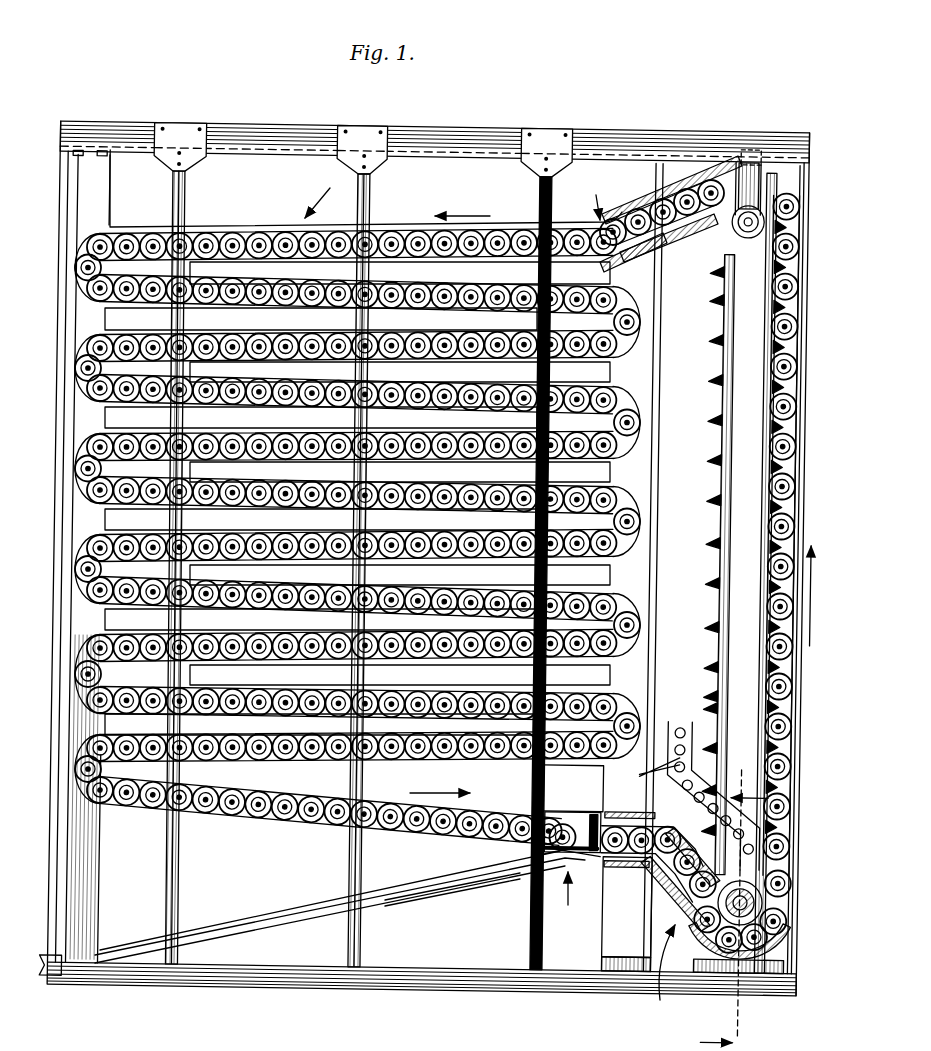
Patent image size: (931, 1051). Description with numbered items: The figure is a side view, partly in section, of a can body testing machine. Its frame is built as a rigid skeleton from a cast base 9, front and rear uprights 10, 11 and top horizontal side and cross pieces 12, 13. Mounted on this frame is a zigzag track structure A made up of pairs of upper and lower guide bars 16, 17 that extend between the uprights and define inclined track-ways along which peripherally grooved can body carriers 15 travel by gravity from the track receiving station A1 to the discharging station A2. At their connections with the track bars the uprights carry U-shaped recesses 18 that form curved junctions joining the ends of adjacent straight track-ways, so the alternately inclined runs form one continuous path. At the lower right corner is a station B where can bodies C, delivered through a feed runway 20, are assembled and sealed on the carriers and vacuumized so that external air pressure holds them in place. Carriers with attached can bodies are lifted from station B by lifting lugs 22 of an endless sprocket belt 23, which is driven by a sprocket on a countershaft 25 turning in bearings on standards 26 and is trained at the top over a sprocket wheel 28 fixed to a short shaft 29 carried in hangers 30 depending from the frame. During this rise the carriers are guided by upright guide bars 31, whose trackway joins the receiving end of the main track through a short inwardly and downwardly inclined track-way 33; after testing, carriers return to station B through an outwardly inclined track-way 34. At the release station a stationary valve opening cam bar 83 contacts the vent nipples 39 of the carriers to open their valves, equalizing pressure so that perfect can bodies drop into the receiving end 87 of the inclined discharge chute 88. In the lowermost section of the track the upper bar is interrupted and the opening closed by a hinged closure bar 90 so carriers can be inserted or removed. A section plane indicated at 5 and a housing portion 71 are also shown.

The section line 5- 5 is at (734, 898).
The cast base 9 is at (450, 993).
The front upright 10 is at (178, 884).
The rear upright 11 is at (95, 222).
The top horizontal side piece 12 is at (445, 135).
The top horizontal cross piece 13 is at (742, 145).
The can body carrier 15 is at (768, 986).
The upper guide bar 16 is at (405, 232).
The lower guide bar 17 is at (475, 262).
The U-shaped recess 18 is at (640, 330).
The feed runway 20 is at (674, 724).
The lifting lug 22 is at (705, 416).
The endless sprocket belt 23 is at (714, 656).
The countershaft 25 is at (727, 936).
The standard 26 is at (770, 960).
The sprocket wheel 28 is at (741, 235).
The short shaft 29 is at (733, 220).
The hanger 30 is at (774, 160).
The upright guide bar 31 is at (768, 700).
The inclined track-way 33 is at (688, 180).
The outwardly inclined track-way 34 is at (694, 834).
The nipple 39 is at (478, 830).
The lower housing 71 is at (666, 902).
The valve opening cam bar 83 is at (578, 822).
The receiving end 87 is at (580, 860).
The discharge chute 88 is at (305, 915).
The closure bar 90 is at (607, 788).
The track structure A is at (316, 199).
The track receiving station A1 is at (587, 202).
The can body discharging station A2 is at (564, 902).
The station B is at (667, 975).
The can body C is at (648, 771).